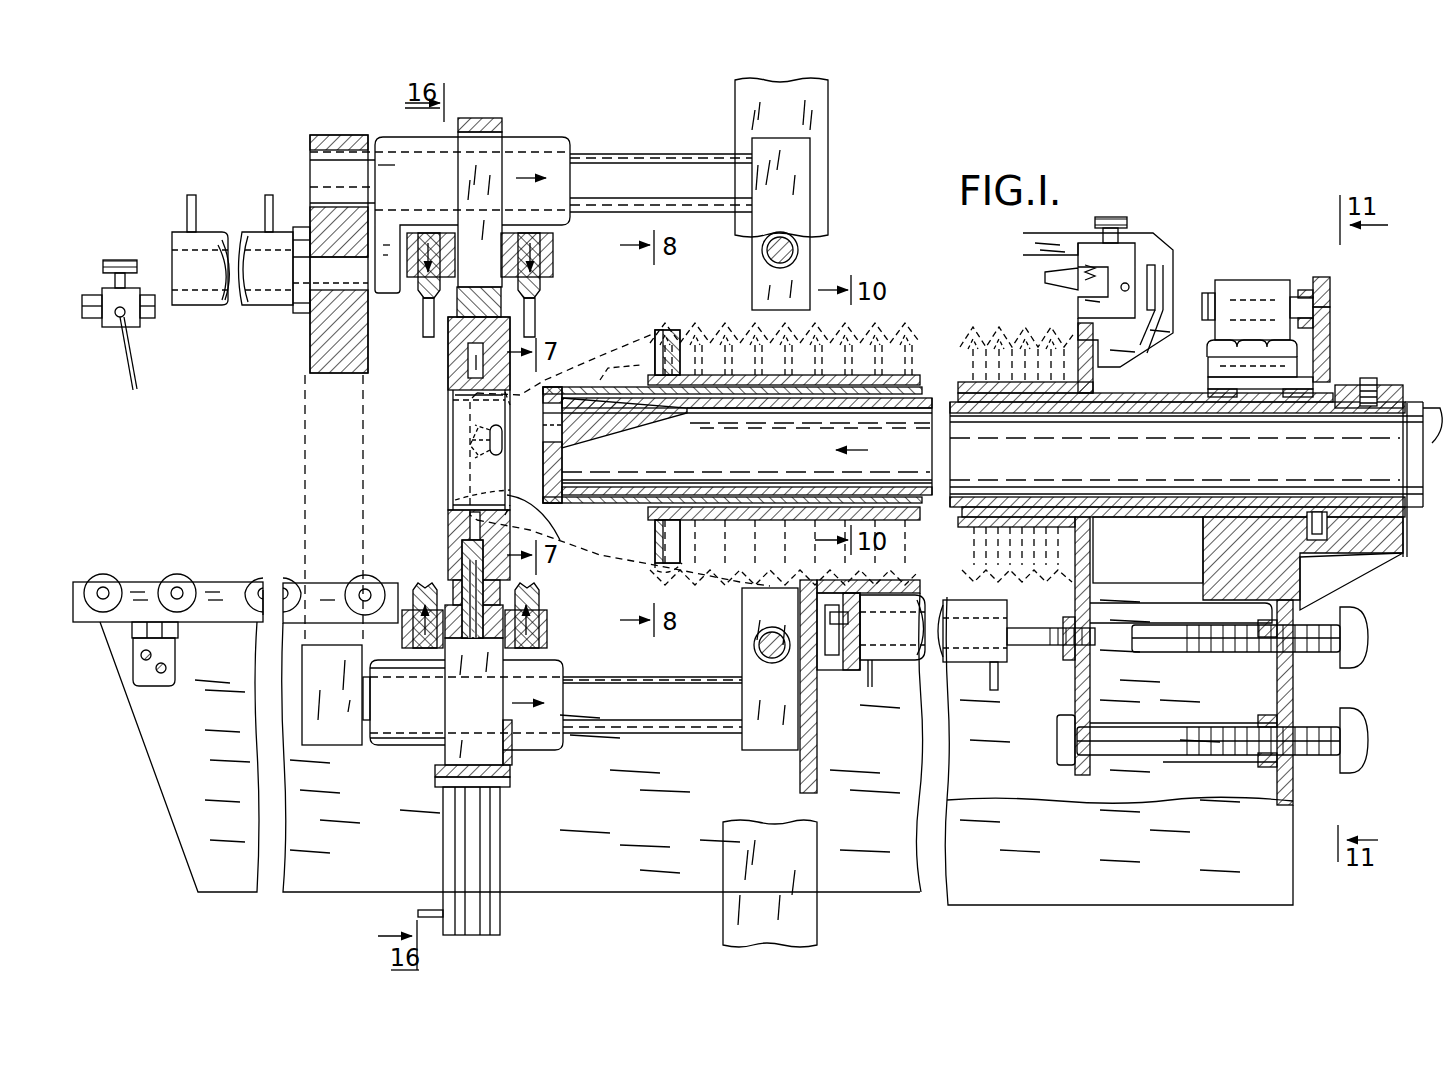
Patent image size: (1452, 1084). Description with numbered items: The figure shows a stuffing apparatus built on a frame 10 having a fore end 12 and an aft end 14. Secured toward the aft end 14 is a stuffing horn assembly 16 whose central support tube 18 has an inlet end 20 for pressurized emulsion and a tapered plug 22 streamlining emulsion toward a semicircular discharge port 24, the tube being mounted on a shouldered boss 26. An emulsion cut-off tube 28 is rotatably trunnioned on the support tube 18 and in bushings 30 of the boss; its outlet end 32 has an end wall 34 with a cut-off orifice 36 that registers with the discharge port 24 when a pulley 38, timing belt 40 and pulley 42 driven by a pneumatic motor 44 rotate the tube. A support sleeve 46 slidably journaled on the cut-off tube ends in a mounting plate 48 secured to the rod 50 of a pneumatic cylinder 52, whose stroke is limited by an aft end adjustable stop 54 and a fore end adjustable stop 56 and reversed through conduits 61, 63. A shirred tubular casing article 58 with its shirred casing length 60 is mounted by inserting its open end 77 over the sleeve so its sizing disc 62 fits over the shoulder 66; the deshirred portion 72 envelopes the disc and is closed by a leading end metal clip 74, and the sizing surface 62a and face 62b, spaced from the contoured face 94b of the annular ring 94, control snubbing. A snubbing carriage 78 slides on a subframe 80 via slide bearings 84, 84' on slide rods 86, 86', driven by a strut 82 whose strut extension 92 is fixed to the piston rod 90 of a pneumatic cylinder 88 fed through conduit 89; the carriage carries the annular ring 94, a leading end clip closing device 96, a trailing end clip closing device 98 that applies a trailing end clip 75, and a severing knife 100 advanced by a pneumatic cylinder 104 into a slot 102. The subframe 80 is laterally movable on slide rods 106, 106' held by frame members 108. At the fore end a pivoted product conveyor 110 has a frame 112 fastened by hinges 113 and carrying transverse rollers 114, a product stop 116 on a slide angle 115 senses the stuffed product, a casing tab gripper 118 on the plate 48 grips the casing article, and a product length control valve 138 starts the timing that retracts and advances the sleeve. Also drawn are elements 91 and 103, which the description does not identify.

The frame 10 is at (1283, 890).
The fore end 12 is at (158, 812).
The aft end 14 is at (1134, 908).
The stuffing horn assembly 16 is at (980, 327).
The central support tube 18 is at (1409, 512).
The inlet end 20 is at (1432, 418).
The tapered plug 22 is at (622, 416).
The discharge port 24 is at (548, 477).
The shouldered boss 26 is at (1385, 385).
The emulsion cut-off tube 28 is at (1168, 394).
The bushings 30 is at (1220, 398).
The outlet end 32 is at (562, 366).
The end wall 34 is at (556, 462).
The cut-off orifice 36 is at (540, 421).
The pulley 38 is at (1325, 512).
The timing belt 40 is at (1330, 358).
The pulley 42 is at (1330, 291).
The pneumatic motor 44 is at (1252, 290).
The support sleeve 46 is at (916, 376).
The mounting plate 48 is at (1091, 548).
The rod 50 is at (1033, 636).
The pneumatic cylinder 52 is at (896, 652).
The aft end adjustable stop 54 is at (1150, 648).
The fore end adjustable stop 56 is at (1130, 754).
The shirred tubular casing article 58 is at (728, 330).
The shirred casing length 60 is at (896, 335).
The conduit 61 is at (869, 689).
The sizing disc 62 is at (672, 328).
The sizing surface 62a is at (676, 570).
The face 62b is at (657, 551).
The conduit 63 is at (994, 691).
The shoulder 66 is at (620, 360).
The deshirred portion 72 is at (456, 500).
The leading end metal clip 74 is at (538, 303).
The trailing end clip 75 is at (427, 302).
The open end 77 is at (1070, 560).
The snubbing carriage 78 is at (556, 132).
The subframe 80 is at (335, 137).
The strut 82 is at (490, 264).
The slide bearing 84 is at (440, 188).
The slide bearing 84' is at (463, 723).
The slide rod 86 is at (661, 164).
The slide rod 86' is at (652, 725).
The pneumatic cylinder 88 is at (208, 245).
The conduit 89 is at (190, 205).
The piston rod 90 is at (316, 268).
The pin 91 is at (268, 200).
The strut extension 92 is at (383, 284).
The annular ring 94 is at (456, 377).
The contoured face 94b is at (560, 529).
The leading end clip closing device 96 is at (530, 243).
The trailing end clip closing device 98 is at (428, 243).
The severing knife 100 is at (470, 534).
The slot 102 is at (468, 358).
The pin 103 is at (418, 913).
The pneumatic cylinder 104 is at (447, 855).
The slide rod 106 is at (823, 249).
The slide rod 106' is at (738, 644).
The frame members 108 is at (818, 110).
The product conveyor 110 is at (217, 580).
The frame 112 is at (215, 623).
The hinges 113 is at (163, 683).
The transverse rollers 114 is at (110, 584).
The slide angle 115 is at (152, 312).
The product stop 116 is at (146, 336).
The casing tab gripper 118 is at (1125, 262).
The product length control valve 138 is at (105, 290).